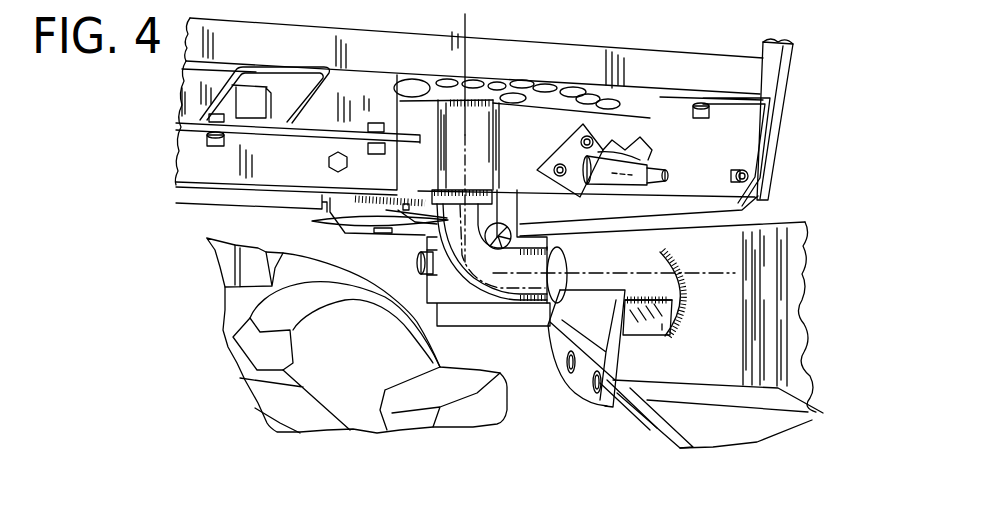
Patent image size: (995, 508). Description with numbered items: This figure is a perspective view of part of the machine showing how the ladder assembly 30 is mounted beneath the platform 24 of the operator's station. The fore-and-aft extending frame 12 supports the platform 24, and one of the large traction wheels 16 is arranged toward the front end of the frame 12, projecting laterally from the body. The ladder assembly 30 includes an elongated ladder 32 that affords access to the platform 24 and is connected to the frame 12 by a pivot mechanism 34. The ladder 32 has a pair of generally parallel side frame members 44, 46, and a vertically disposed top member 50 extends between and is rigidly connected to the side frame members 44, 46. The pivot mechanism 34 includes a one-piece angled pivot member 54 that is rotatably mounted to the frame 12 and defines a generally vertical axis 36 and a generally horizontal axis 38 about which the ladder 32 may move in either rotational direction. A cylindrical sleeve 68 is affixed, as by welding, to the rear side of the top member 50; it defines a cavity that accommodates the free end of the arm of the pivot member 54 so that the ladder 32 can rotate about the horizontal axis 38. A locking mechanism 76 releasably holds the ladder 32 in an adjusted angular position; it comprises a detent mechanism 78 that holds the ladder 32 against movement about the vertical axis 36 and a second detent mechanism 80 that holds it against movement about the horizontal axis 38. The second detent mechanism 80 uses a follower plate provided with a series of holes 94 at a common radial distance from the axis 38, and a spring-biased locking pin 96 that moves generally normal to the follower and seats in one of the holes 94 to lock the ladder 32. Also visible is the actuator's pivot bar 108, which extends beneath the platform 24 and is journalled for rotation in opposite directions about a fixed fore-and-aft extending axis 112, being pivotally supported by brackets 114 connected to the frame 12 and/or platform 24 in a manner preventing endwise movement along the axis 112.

The frame 12 is at (176, 210).
The traction wheels 16 is at (300, 382).
The platform 24 is at (505, 40).
The ladder assembly 30 is at (815, 184).
The ladder 32 is at (755, 448).
The pivot mechanism 34 is at (505, 335).
The vertical axis 36 is at (467, 122).
The horizontal axis 38 is at (698, 280).
The side frame member 44 is at (800, 363).
The side frame member 46 is at (643, 427).
The top member 50 is at (653, 358).
The pivot member 54 is at (476, 270).
The cylindrical sleeve 68 is at (664, 268).
The locking mechanism 76 is at (373, 238).
The detent mechanism 78 is at (306, 221).
The second detent mechanism 80 is at (594, 408).
The holes 94 is at (573, 372).
The locking pin 96 is at (418, 264).
The pivot bar 108 is at (662, 174).
The fore-and-aft extending axis 112 is at (693, 173).
The brackets 114 is at (556, 158).